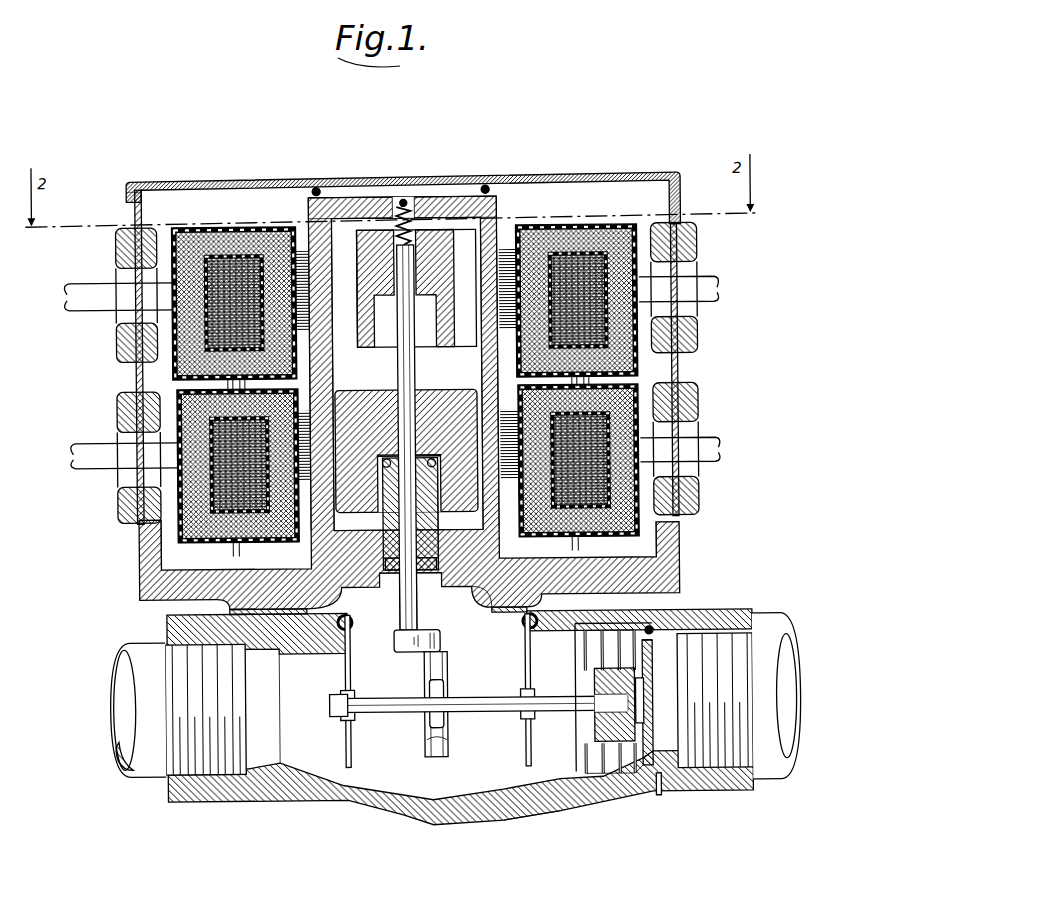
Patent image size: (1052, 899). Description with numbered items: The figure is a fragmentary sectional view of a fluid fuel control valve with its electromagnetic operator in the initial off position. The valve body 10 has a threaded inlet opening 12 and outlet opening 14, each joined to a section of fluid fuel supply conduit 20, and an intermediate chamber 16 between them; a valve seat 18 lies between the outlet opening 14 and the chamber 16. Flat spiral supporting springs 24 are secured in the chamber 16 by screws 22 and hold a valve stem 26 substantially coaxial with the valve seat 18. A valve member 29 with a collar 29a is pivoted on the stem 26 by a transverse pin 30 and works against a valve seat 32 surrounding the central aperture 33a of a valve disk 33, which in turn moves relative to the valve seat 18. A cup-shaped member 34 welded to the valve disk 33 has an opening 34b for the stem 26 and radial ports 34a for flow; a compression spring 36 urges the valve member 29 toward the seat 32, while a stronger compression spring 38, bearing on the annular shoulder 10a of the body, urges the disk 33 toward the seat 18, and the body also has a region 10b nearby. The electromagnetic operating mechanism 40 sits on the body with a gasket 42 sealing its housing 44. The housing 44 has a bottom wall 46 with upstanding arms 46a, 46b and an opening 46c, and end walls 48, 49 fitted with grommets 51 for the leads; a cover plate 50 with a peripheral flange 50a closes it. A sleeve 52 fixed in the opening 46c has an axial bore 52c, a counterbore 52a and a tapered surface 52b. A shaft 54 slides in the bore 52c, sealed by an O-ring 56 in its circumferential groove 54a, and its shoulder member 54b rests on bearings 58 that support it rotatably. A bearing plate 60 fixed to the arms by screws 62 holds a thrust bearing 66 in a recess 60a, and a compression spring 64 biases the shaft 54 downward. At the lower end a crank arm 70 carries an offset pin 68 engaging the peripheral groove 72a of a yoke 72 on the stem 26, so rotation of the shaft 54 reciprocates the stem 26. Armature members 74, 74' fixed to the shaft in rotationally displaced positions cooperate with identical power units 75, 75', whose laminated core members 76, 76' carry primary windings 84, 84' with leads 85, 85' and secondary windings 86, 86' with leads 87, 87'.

The valve body 10 is at (540, 824).
The annular ledge or shoulder 10a is at (556, 815).
The valve body lobe 10b is at (486, 618).
The inlet opening 12 is at (258, 775).
The outlet opening 14 is at (671, 633).
The intermediate chamber 16 is at (468, 767).
The valve seat 18 is at (652, 791).
The fluid fuel supply conduit 20 is at (128, 661).
The screws 22 is at (350, 622).
The supporting springs 24 is at (343, 686).
The valve stem 26 is at (490, 698).
The valve member 29 is at (645, 669).
The collar 29a is at (632, 772).
The transverse pin 30 is at (641, 704).
The valve seat 32 is at (645, 692).
The valve disk 33 is at (649, 628).
The central aperture 33a is at (657, 797).
The cup-shaped member 34 is at (590, 682).
The radial ports 34a is at (640, 630).
The opening 34b is at (576, 742).
The compression spring 36 is at (592, 702).
The compression spring 38 is at (573, 638).
The electromagnetic operating mechanism 40 is at (112, 360).
The gasket 42 is at (228, 610).
The housing 44 is at (150, 590).
The bottom wall 46 is at (308, 552).
The upstanding arm 46a is at (312, 216).
The upstanding arm 46b is at (500, 222).
The opening 46c is at (380, 556).
The end wall 48 is at (137, 383).
The end wall 49 is at (679, 373).
The cover plate 50 is at (300, 181).
The peripheral flange 50a is at (129, 184).
The grommet 51 is at (117, 242).
The sleeve 52 is at (430, 575).
The counterbore 52a is at (438, 549).
The tapered surface 52b is at (438, 476).
The axial bore 52c is at (380, 582).
The shaft 54 is at (398, 362).
The circumferential groove 54a is at (416, 612).
The shoulder member 54b is at (416, 380).
The O-ring 56 is at (393, 572).
The bearings 58 is at (395, 459).
The bearing plate 60 is at (346, 197).
The recess 60a is at (428, 217).
The screws 62 is at (318, 187).
The compression spring 64 is at (401, 199).
The thrust bearing 66 is at (407, 206).
The pin 68 is at (445, 662).
The crank arm 70 is at (394, 646).
The yoke 72 is at (426, 718).
The peripheral groove 72a is at (430, 757).
The armature member 74 is at (421, 249).
The armature member 74' is at (406, 440).
The power unit 75 is at (116, 343).
The power unit 75' is at (117, 505).
The core member 76 is at (228, 279).
The core member 76' is at (228, 492).
The primary winding 84 is at (568, 287).
The primary winding 84' is at (569, 469).
The circuit connecting means 85 is at (694, 314).
The circuit connecting means 85' is at (695, 476).
The secondary winding 86 is at (240, 293).
The secondary winding 86' is at (205, 474).
The circuit connecting means 87 is at (111, 297).
The circuit connecting means 87' is at (113, 459).